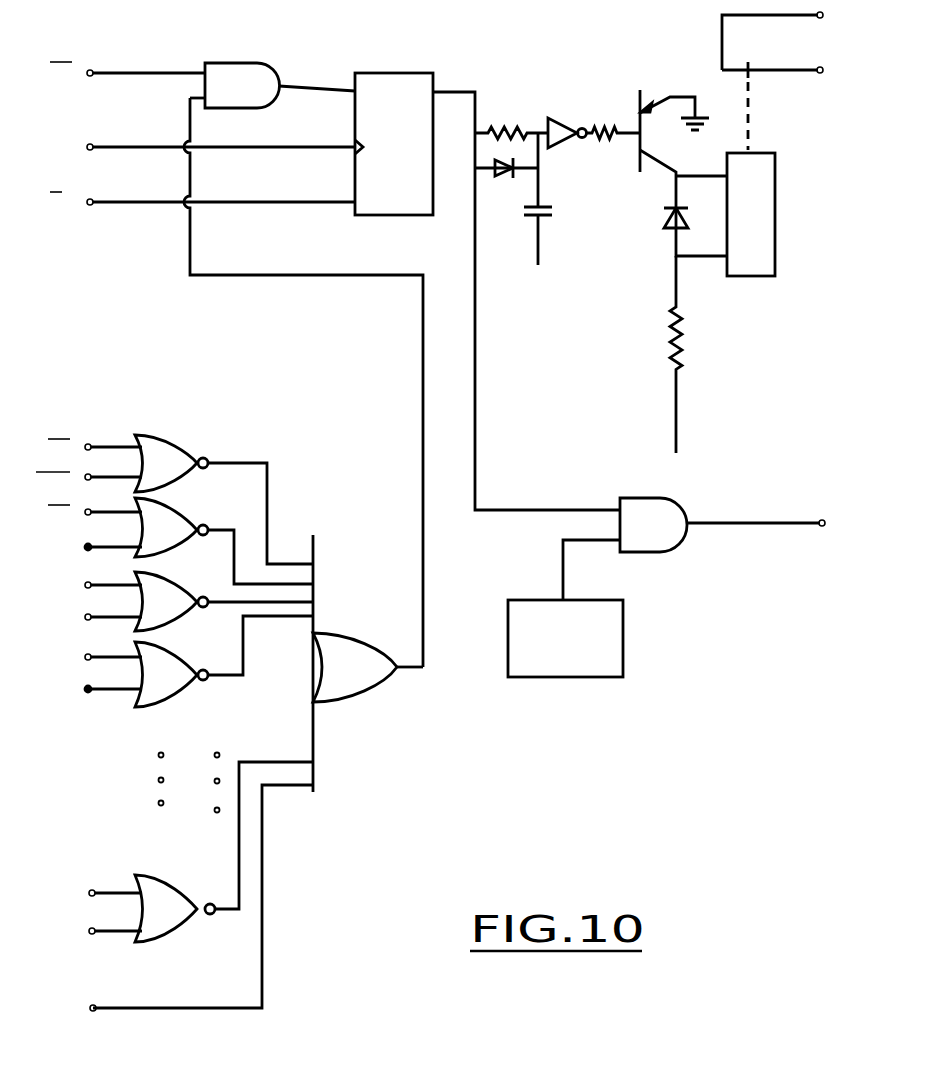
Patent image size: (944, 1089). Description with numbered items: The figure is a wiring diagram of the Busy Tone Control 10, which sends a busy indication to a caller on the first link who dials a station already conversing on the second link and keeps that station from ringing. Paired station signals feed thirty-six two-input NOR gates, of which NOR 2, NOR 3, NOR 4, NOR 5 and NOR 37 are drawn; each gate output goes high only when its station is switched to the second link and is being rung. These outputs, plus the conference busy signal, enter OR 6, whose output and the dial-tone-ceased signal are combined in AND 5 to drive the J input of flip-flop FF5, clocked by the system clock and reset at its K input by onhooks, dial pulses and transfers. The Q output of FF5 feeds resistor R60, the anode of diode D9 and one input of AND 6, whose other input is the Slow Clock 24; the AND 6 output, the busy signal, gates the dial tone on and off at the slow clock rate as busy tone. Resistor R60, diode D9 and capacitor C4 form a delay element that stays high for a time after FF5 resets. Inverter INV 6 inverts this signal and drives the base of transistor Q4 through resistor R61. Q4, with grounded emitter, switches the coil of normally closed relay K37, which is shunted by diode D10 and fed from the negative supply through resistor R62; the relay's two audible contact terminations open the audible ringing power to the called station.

The busy tone control 10 is at (445, 525).
The slow clock 24 is at (623, 640).
The gate AND 5 AND5 is at (242, 85).
The flip-flop FF5 is at (394, 133).
The resistor R60 is at (511, 123).
The inverter INV 6 INV6 is at (568, 124).
The resistor R61 is at (614, 144).
The diode D9 is at (506, 180).
The capacitor C4 is at (549, 199).
The transistor Q4 is at (683, 173).
The diode D10 is at (662, 222).
The relay K37 is at (751, 169).
The resistor R62 is at (696, 354).
The gate AND 6 AND6 is at (653, 525).
The gate NOR 2 NOR2 is at (171, 463).
The gate NOR 3 NOR3 is at (171, 527).
The gate NOR 4 NOR4 is at (171, 601).
The gate NOR 5 NOR5 is at (171, 674).
The gate NOR 37 NOR37 is at (175, 908).
The gate OR 6 OR6 is at (355, 663).